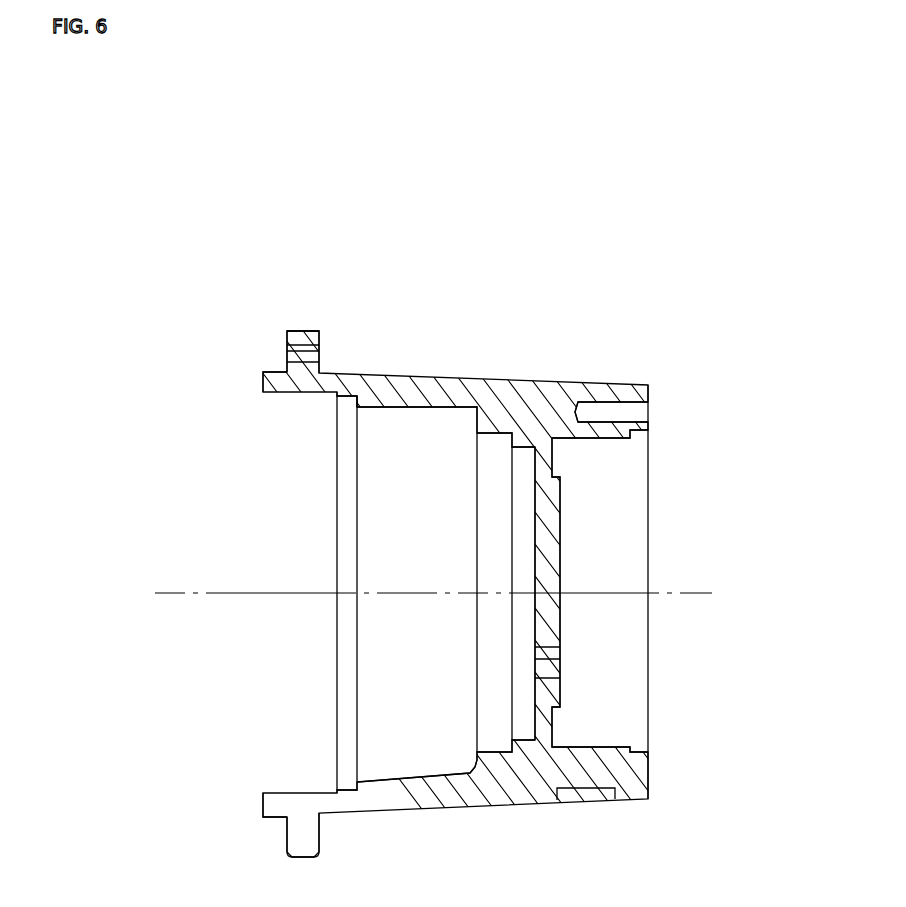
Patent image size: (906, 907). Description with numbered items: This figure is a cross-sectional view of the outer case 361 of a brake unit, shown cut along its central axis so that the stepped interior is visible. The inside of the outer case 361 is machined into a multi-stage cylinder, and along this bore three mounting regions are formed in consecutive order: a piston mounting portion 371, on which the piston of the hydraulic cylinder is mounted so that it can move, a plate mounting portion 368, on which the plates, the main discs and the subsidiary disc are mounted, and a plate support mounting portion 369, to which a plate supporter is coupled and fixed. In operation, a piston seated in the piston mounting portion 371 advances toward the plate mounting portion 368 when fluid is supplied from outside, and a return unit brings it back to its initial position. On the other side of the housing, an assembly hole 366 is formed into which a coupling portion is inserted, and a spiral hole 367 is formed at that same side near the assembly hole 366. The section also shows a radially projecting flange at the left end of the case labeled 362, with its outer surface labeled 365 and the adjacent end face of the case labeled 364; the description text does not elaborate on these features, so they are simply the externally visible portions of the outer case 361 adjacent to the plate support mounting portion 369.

The outer case 361 is at (168, 211).
The flange 362 is at (295, 362).
The front end face 364 is at (263, 372).
The flange outer surface 365 is at (316, 333).
The assembly hole 366 is at (619, 449).
The spiral hole 367 is at (634, 411).
The plate mounting portion 368 is at (423, 414).
The plate support mounting portion 369 is at (345, 404).
The piston mounting portion 371 is at (522, 452).